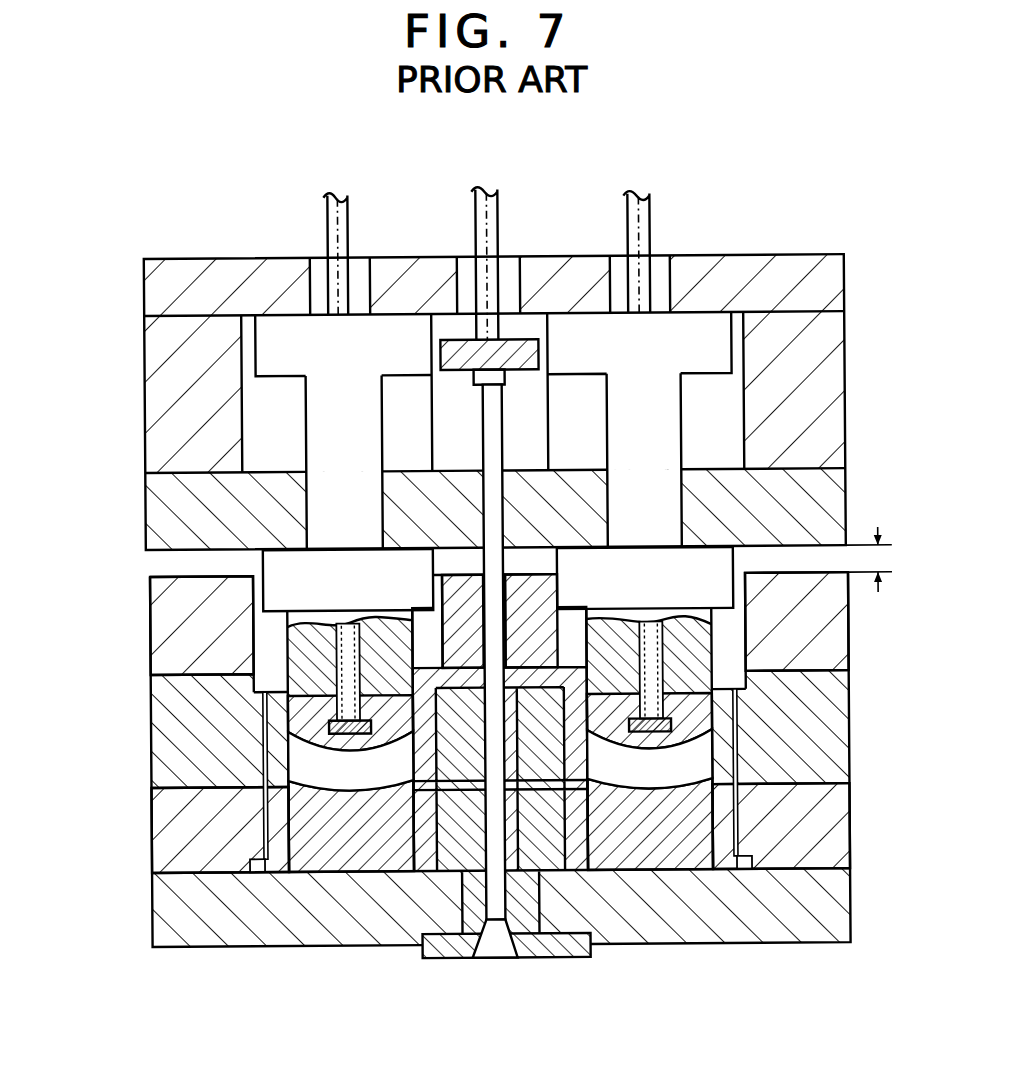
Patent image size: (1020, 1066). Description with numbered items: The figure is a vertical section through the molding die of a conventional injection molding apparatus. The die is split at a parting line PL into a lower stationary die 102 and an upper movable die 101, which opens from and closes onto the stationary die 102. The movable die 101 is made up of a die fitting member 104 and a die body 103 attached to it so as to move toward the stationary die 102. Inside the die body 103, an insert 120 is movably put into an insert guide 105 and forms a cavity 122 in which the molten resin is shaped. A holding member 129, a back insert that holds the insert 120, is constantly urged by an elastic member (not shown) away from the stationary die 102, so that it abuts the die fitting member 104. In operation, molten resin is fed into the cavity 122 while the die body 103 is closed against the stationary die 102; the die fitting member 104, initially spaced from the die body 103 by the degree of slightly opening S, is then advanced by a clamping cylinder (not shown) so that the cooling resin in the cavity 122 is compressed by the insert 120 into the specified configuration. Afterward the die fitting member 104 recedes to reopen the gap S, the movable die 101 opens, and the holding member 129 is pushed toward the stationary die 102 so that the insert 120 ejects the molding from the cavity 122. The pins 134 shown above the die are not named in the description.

The movable die 101 is at (486, 365).
The stationary die 102 is at (500, 808).
The die body 103 is at (160, 658).
The die fitting member 104 is at (160, 373).
The insert guide 105 is at (275, 753).
The insert 120 is at (288, 706).
The cavity 122 is at (333, 778).
The holding member 129 is at (326, 446).
The pin 134 is at (352, 222).
The parting line PL is at (888, 787).
The degree of slightly opening S is at (878, 559).